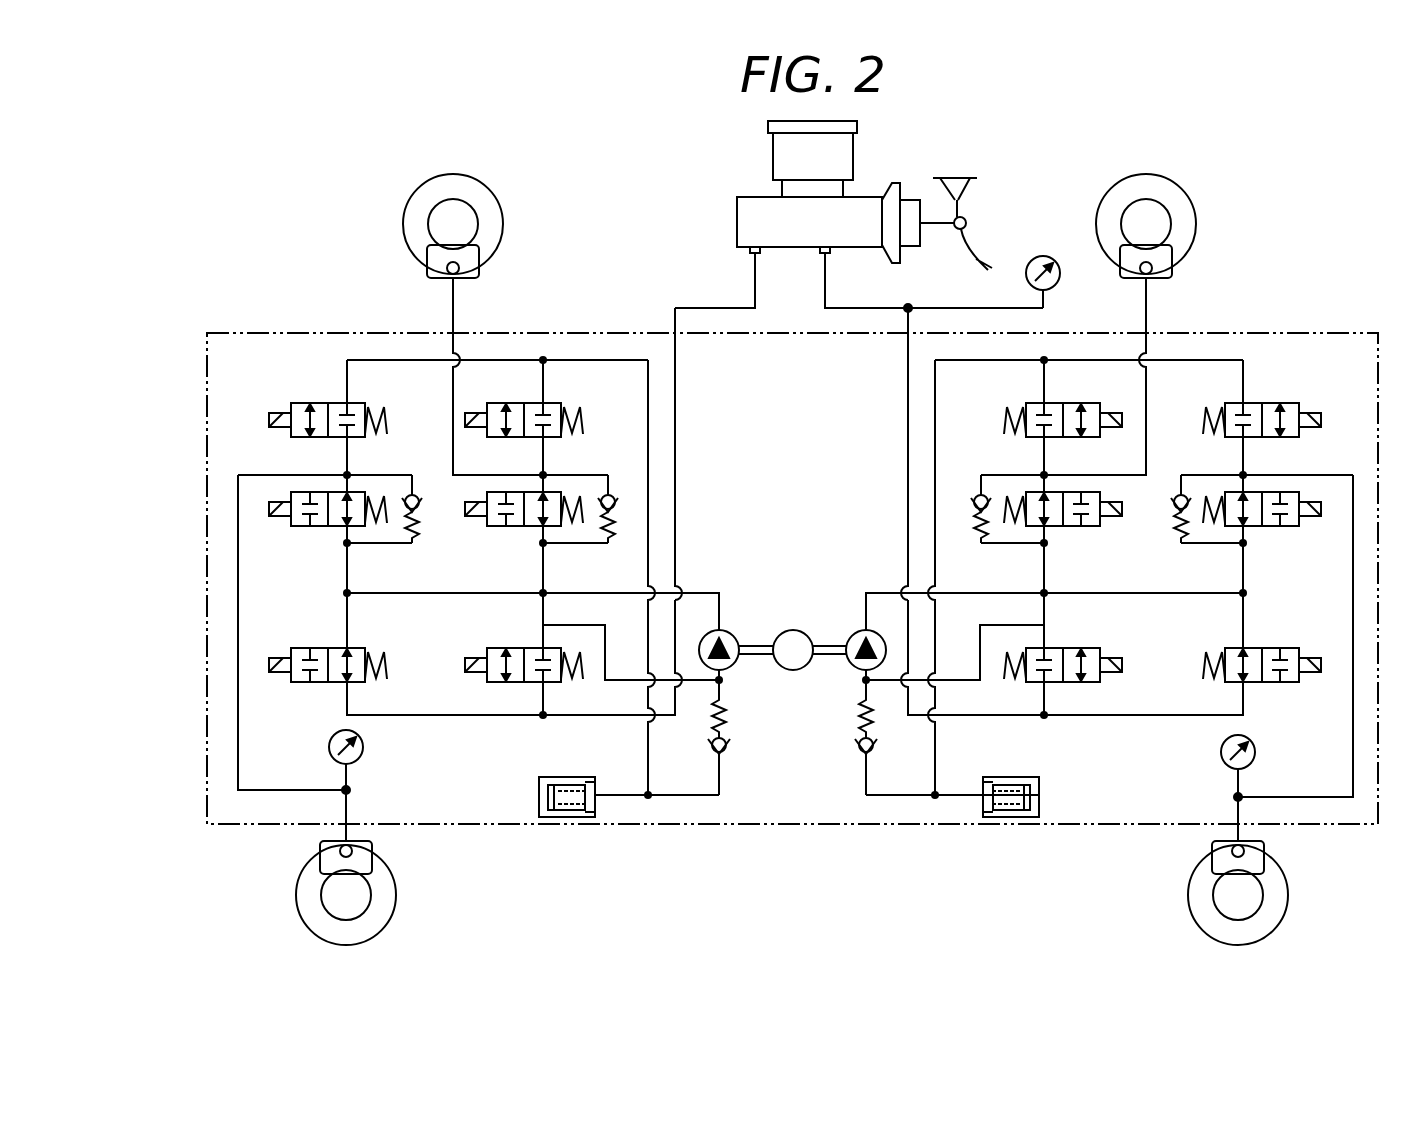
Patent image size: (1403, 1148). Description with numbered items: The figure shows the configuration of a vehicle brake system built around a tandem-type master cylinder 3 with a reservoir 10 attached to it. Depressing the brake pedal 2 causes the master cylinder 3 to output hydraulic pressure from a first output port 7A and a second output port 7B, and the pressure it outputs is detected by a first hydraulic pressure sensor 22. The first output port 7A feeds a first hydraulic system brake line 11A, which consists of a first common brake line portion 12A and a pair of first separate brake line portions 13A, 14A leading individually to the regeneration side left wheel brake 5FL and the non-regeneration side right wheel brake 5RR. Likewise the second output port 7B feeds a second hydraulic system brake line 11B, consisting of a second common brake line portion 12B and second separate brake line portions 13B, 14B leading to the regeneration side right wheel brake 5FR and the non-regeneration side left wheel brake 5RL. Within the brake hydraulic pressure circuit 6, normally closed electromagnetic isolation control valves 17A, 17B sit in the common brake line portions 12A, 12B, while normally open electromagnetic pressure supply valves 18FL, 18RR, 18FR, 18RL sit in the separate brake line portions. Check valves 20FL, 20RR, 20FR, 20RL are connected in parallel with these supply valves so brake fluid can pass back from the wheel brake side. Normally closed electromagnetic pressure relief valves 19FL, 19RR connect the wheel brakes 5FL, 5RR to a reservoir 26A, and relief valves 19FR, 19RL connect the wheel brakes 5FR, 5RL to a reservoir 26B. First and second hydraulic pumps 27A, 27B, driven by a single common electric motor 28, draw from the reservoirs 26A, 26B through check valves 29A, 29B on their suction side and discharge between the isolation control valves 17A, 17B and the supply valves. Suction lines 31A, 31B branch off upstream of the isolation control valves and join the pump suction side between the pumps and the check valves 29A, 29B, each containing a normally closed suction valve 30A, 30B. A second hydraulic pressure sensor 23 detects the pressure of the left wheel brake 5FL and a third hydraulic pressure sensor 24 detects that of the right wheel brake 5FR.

The brake pedal 2 is at (985, 248).
The master cylinder 3 is at (745, 198).
The brake hydraulic pressure circuit 6 is at (845, 830).
The first output port 7A is at (752, 256).
The second output port 7B is at (828, 256).
The reservoir 10 is at (857, 158).
The first hydraulic system brake line 11A is at (679, 456).
The second hydraulic system brake line 11B is at (906, 456).
The first common brake line portion 12A is at (678, 550).
The second common brake line portion 12B is at (907, 550).
The first separate brake line portion 13A is at (240, 770).
The second separate brake line portion 13B is at (1352, 768).
The first separate brake line portion 14A is at (455, 300).
The second separate brake line portion 14B is at (1146, 303).
The electromagnetic isolation control valve 17A is at (318, 683).
The electromagnetic isolation control valve 17B is at (1275, 647).
The electromagnetic pressure supply valve 18FL is at (318, 526).
The electromagnetic pressure supply valve 18RR is at (518, 526).
The electromagnetic pressure supply valve 18RL is at (1070, 526).
The electromagnetic pressure supply valve 18FR is at (1270, 526).
The electromagnetic pressure relief valve 19FL is at (306, 403).
The electromagnetic pressure relief valve 19RR is at (556, 404).
The electromagnetic pressure relief valve 19RL is at (1052, 404).
The electromagnetic pressure relief valve 19FR is at (1290, 388).
The check valve 20FL is at (420, 495).
The check valve 20RR is at (615, 495).
The check valve 20RL is at (978, 495).
The check valve 20FR is at (1180, 495).
The first hydraulic pressure sensor 22 is at (1045, 256).
The second hydraulic pressure sensor 23 is at (360, 760).
The third hydraulic pressure sensor 24 is at (1225, 763).
The reservoir 26A is at (537, 786).
The reservoir 26B is at (1044, 783).
The first hydraulic pump 27A is at (725, 670).
The second hydraulic pump 27B is at (860, 670).
The electric motor 28 is at (792, 630).
The check valve 29A is at (728, 748).
The check valve 29B is at (858, 748).
The suction valve 30A is at (495, 647).
The suction valve 30B is at (1070, 647).
The suction line 31A is at (605, 655).
The suction line 31B is at (978, 655).
The non-regeneration side right wheel brake 5RR is at (406, 209).
The non-regeneration side left wheel brake 5RL is at (1198, 217).
The regeneration side left wheel brake 5FL is at (397, 900).
The regeneration side right wheel brake 5FR is at (1189, 900).